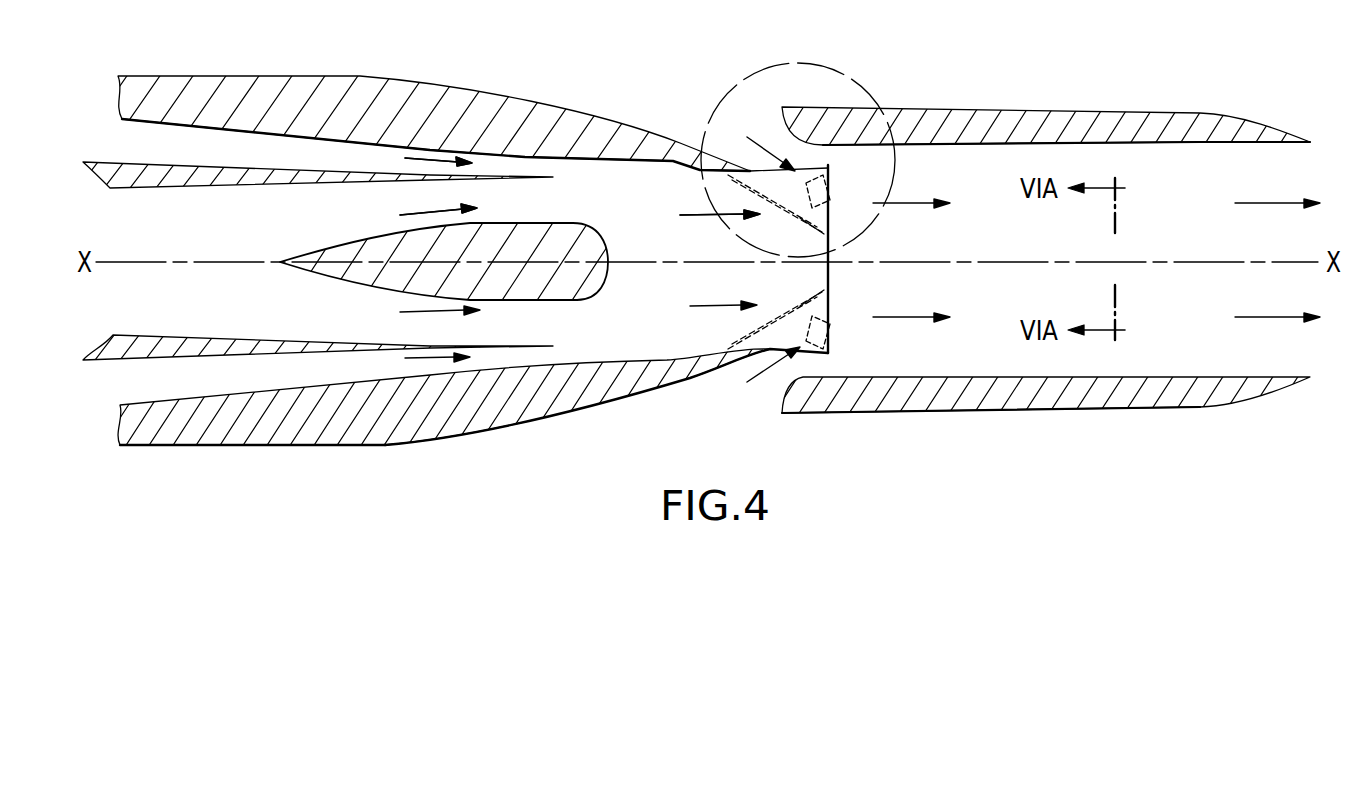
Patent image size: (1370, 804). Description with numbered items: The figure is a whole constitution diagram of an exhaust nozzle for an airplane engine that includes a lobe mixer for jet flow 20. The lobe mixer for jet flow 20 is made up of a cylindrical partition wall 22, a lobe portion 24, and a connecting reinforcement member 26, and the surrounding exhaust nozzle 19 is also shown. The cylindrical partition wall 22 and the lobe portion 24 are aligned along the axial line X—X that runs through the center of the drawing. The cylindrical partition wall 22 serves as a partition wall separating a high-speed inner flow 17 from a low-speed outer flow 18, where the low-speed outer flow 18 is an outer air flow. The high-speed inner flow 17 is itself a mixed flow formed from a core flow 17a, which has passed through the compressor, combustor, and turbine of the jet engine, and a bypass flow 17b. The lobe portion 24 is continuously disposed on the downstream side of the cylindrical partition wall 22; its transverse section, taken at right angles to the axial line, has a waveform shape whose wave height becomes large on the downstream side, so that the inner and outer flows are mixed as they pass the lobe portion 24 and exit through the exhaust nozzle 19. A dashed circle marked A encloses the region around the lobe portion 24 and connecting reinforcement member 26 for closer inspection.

The high-speed inner flow 17 is at (700, 214).
The core flow 17a is at (425, 212).
The bypass flow 17b is at (435, 162).
The low-speed outer flow 18 is at (765, 152).
The exhaust nozzle 19 is at (1043, 122).
The lobe mixer for jet flow 20 is at (823, 374).
The cylindrical partition wall 22 is at (642, 148).
The lobe portion 24 is at (833, 158).
The connecting reinforcement member 26 is at (840, 197).
The detail region A is at (843, 70).